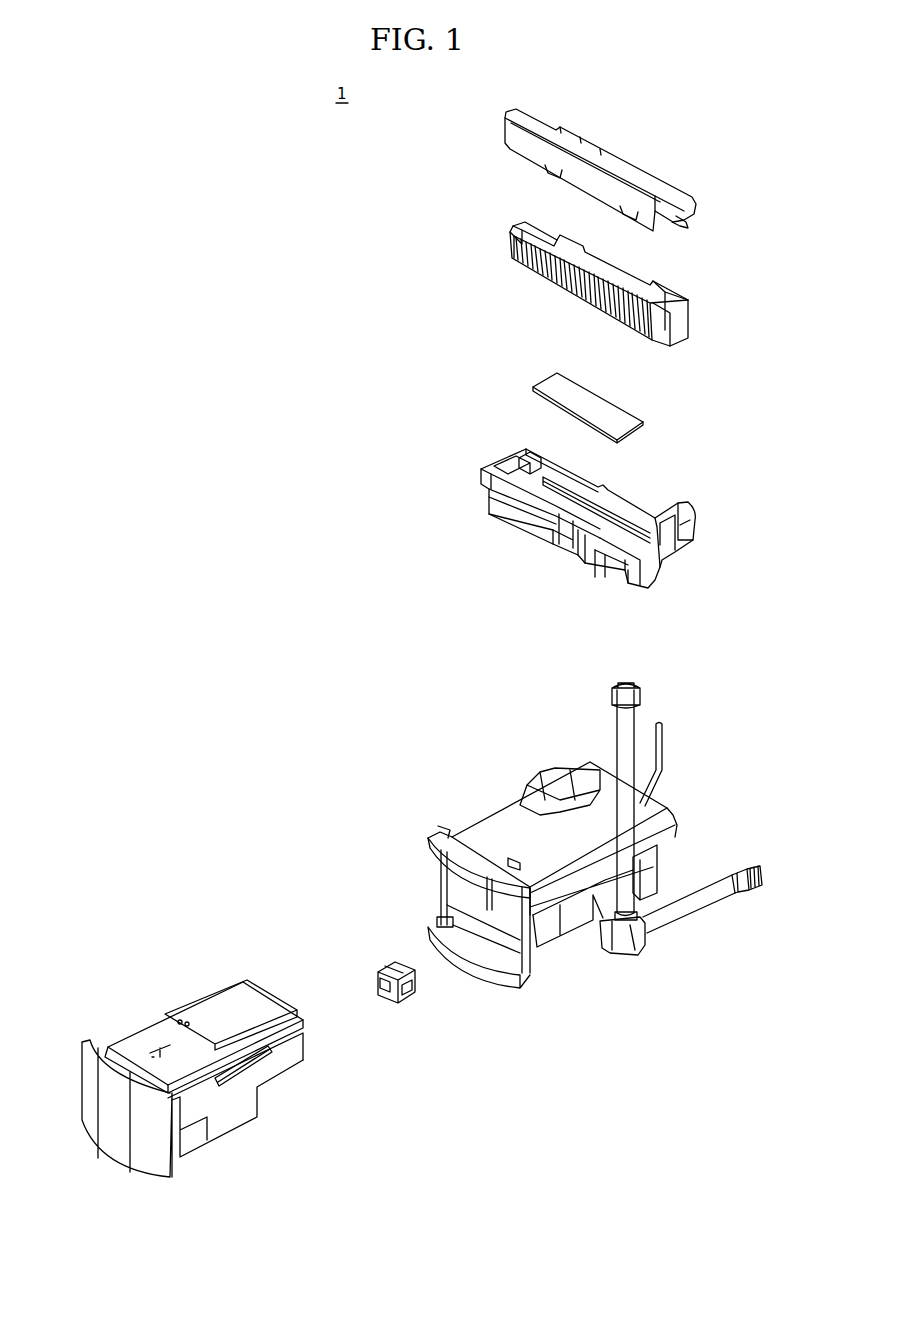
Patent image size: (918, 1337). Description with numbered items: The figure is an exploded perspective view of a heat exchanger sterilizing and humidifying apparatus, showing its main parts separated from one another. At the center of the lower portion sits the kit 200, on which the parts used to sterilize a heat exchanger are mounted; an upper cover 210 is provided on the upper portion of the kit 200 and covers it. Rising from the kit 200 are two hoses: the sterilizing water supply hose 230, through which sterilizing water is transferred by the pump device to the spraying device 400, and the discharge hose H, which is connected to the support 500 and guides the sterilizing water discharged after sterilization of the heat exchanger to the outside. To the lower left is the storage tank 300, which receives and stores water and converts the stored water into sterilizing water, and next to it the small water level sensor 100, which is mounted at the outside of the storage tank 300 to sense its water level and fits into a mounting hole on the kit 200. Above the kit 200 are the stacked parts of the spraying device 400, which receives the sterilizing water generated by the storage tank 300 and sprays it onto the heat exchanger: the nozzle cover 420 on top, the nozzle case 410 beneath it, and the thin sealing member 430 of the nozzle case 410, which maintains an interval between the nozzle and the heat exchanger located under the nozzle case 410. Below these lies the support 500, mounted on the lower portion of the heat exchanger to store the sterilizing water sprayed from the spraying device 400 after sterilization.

The water level sensor 100 is at (360, 960).
The kit 200 is at (570, 835).
The upper cover 210 is at (500, 826).
The sterilizing water supply hose 230 is at (662, 752).
The discharge hose H is at (620, 731).
The storage tank 300 is at (137, 1012).
The spraying device 400 is at (666, 276).
The nozzle case 410 is at (660, 305).
The nozzle cover 420 is at (662, 195).
The sealing member 430 is at (646, 408).
The support 500 is at (462, 499).